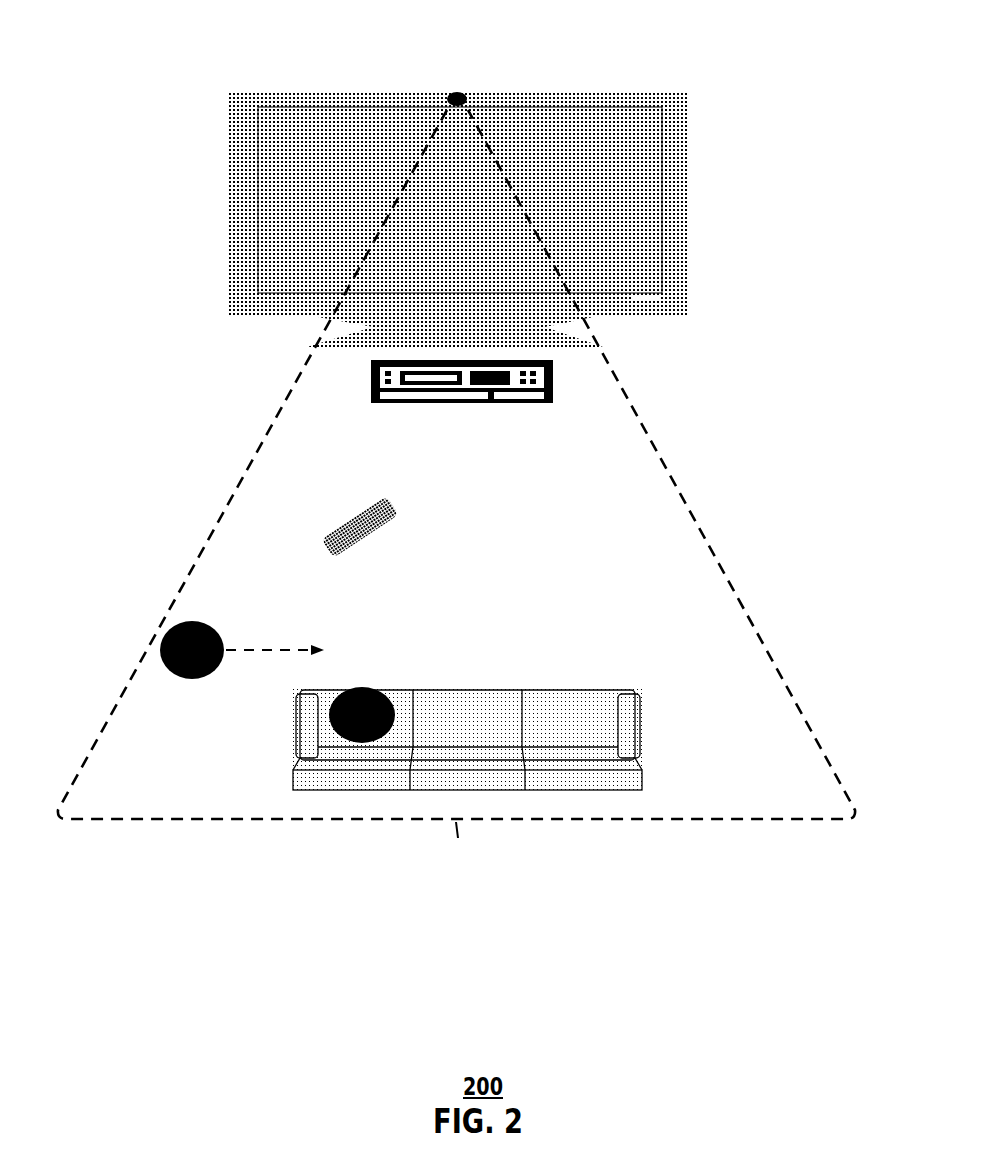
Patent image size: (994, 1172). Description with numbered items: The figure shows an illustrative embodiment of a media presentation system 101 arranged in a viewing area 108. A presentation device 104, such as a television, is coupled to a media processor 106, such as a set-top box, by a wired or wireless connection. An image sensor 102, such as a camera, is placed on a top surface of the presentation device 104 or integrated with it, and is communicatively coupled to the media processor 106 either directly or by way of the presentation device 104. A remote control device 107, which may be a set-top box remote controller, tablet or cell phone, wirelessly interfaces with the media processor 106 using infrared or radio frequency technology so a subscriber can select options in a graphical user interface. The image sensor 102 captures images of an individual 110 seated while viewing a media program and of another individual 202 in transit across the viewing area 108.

The media presentation system 101 is at (129, 892).
The image sensor 102 is at (453, 92).
The presentation device 104 is at (685, 317).
The media processor 106 is at (480, 403).
The remote control device 107 is at (372, 527).
The viewing area 108 is at (643, 820).
The individual 110 is at (363, 686).
The another individual 202 is at (212, 628).